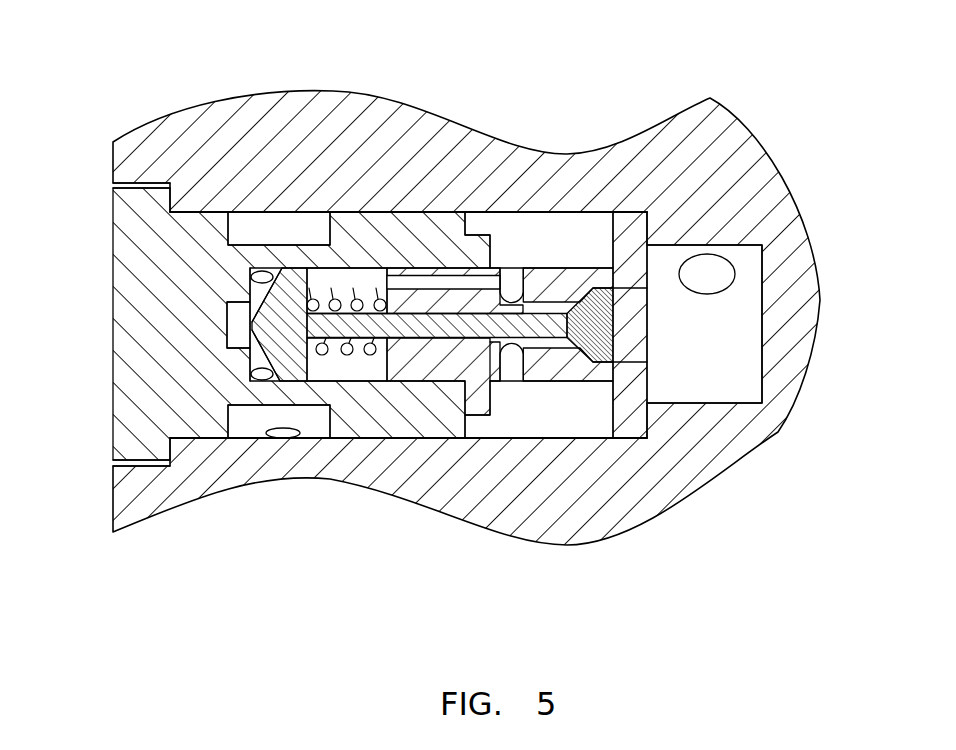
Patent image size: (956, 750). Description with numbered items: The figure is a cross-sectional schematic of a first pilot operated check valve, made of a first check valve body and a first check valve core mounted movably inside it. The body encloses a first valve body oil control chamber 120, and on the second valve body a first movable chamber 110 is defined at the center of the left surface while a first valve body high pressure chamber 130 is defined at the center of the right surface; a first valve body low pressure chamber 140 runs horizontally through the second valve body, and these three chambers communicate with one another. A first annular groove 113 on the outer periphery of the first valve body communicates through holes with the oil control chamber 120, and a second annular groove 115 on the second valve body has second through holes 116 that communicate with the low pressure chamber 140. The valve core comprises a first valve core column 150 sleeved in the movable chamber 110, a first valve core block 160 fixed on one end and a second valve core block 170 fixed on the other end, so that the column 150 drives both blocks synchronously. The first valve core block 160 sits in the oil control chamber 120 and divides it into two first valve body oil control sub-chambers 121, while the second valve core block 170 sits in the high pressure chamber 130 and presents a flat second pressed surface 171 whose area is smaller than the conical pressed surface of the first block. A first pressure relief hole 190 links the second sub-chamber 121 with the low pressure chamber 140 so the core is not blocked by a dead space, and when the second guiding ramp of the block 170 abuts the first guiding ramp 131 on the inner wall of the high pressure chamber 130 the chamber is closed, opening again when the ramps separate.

The first movable chamber 110 is at (452, 333).
The first annular groove 113 is at (253, 228).
The second annular groove 115 is at (523, 412).
The second through holes 116 is at (511, 294).
The first valve body oil control chamber 120 is at (256, 293).
The first valve body oil control sub-chambers 121 is at (257, 353).
The first valve body high pressure chamber 130 is at (633, 331).
The first guiding ramp 131 is at (584, 296).
The first valve body low pressure chamber 140 is at (532, 341).
The first valve core column 150 is at (415, 340).
The first valve core block 160 is at (290, 340).
The second valve core block 170 is at (608, 338).
The second pressed surface 171 is at (700, 243).
The first pressure relief hole 190 is at (430, 283).